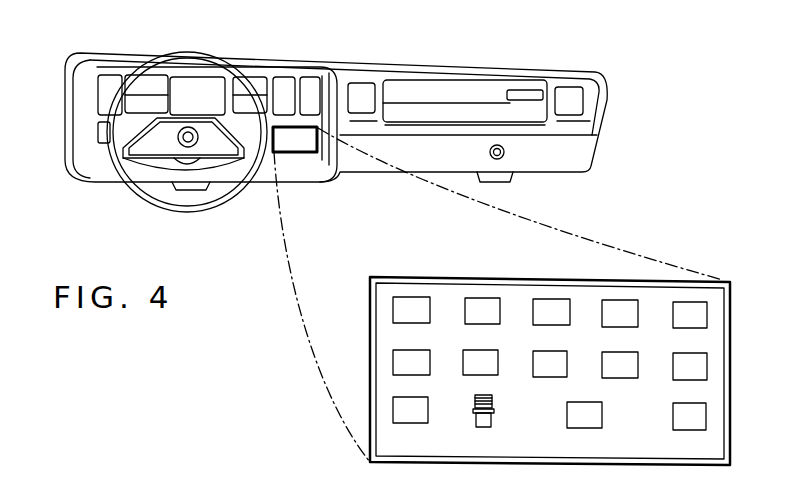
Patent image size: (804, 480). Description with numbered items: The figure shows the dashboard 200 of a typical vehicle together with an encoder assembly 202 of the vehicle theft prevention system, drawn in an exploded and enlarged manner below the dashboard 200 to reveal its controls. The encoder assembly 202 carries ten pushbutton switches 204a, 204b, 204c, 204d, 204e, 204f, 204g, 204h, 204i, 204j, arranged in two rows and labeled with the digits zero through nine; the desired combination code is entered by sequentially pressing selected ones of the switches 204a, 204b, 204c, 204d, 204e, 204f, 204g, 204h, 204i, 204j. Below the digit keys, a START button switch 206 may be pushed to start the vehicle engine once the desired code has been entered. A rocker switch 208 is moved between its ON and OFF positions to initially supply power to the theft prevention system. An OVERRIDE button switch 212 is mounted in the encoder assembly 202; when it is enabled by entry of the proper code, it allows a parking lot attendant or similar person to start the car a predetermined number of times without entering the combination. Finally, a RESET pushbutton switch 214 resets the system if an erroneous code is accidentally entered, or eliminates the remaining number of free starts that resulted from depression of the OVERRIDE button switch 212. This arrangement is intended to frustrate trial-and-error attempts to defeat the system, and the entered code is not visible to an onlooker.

The dashboard 200 is at (465, 50).
The encoder assembly 202 is at (663, 251).
The pushbutton switch 204a is at (402, 297).
The pushbutton switch 204b is at (468, 298).
The pushbutton switch 204c is at (545, 299).
The pushbutton switch 204d is at (608, 300).
The pushbutton switch 204e is at (692, 302).
The pushbutton switch 204f is at (431, 364).
The pushbutton switch 204g is at (499, 364).
The pushbutton switch 204h is at (569, 364).
The pushbutton switch 204i is at (639, 366).
The pushbutton switch 204j is at (707, 368).
The START button switch 206 is at (403, 407).
The rocker switch 208 is at (493, 405).
The OVERRIDE button switch 212 is at (593, 408).
The RESET pushbutton switch 214 is at (705, 408).